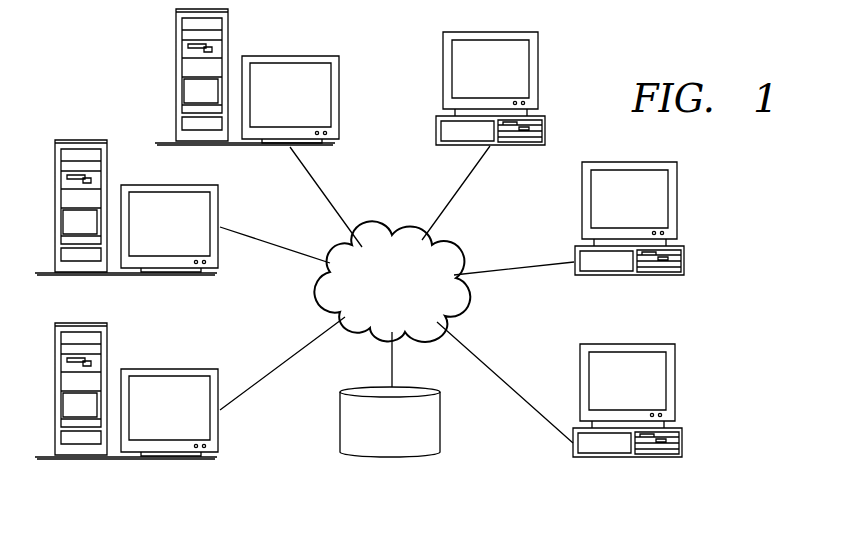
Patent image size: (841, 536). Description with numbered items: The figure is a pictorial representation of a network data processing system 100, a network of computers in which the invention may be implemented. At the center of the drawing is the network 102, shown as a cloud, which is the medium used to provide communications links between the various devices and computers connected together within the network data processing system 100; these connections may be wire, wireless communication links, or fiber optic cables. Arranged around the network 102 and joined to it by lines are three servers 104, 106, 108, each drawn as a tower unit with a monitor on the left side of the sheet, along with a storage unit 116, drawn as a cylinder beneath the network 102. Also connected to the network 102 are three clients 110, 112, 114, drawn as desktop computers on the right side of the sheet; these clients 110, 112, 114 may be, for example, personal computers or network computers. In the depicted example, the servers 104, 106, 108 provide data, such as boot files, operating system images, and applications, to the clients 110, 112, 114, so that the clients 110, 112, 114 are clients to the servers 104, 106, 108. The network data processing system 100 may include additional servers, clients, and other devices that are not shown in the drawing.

The network data processing system 100 is at (105, 62).
The network 102 is at (453, 292).
The server 104 is at (149, 419).
The server 106 is at (149, 236).
The server 108 is at (268, 104).
The client 110 is at (471, 81).
The client 112 is at (608, 209).
The client 114 is at (607, 391).
The storage unit 116 is at (340, 422).